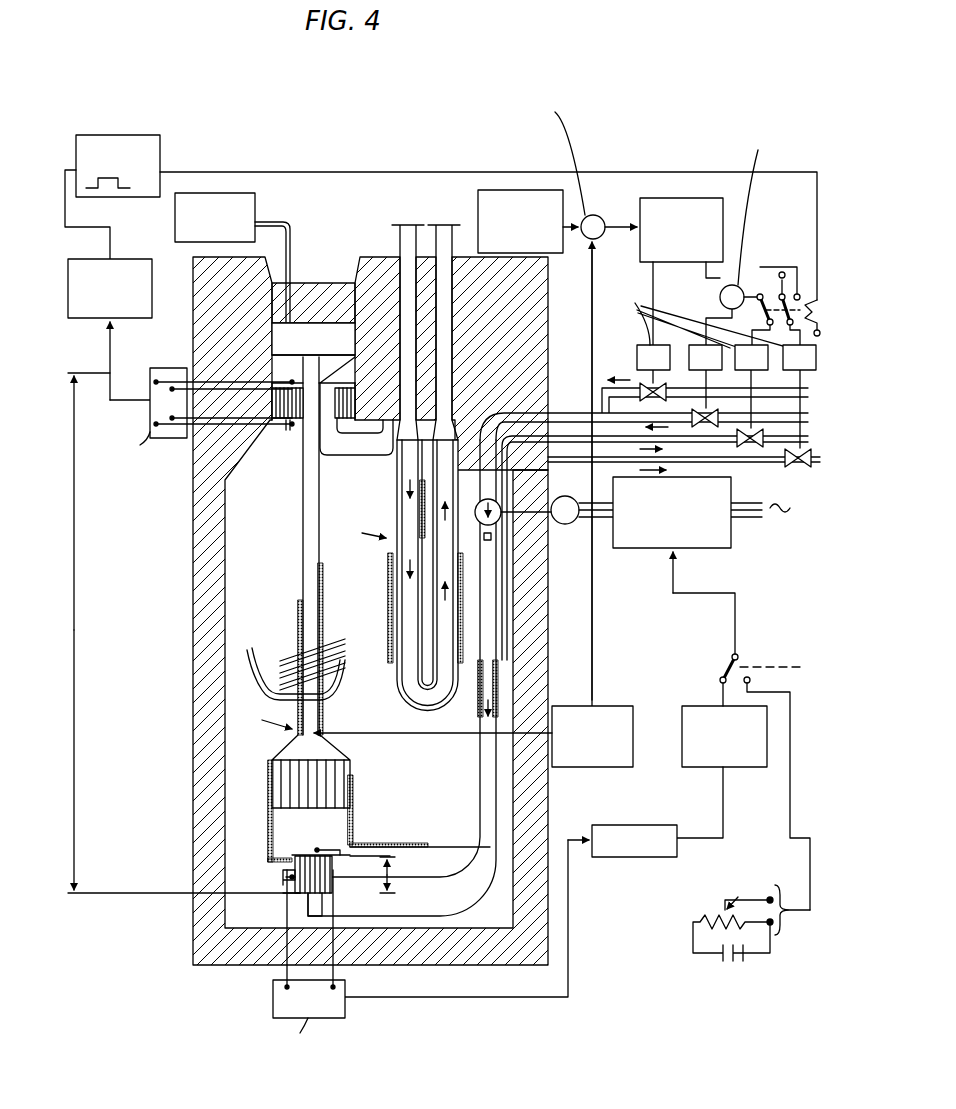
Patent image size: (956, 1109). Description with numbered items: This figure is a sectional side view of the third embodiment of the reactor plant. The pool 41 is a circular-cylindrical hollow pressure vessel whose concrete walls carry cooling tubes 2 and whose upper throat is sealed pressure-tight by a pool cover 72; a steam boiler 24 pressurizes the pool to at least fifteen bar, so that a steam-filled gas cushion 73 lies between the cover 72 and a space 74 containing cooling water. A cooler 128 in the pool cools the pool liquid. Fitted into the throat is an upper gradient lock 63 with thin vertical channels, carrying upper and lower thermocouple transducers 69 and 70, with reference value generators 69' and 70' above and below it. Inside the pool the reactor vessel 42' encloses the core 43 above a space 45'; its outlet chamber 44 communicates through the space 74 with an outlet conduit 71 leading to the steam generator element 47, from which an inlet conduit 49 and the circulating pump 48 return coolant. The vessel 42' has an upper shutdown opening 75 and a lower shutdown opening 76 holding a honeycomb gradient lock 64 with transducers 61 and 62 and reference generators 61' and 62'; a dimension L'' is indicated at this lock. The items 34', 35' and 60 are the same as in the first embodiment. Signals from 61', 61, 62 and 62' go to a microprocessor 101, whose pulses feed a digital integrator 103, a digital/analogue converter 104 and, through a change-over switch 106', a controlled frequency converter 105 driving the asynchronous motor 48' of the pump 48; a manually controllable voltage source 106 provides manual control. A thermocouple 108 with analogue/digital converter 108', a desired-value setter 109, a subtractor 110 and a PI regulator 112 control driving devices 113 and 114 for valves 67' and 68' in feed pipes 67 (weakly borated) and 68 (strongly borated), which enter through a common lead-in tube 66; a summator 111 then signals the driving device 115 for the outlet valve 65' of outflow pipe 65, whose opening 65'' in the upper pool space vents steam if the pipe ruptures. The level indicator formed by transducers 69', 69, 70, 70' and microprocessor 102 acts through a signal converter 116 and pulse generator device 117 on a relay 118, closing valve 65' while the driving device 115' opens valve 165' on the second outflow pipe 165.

The pulse generator device 117 is at (94, 135).
The steam boiler 24 is at (200, 193).
The pool cover 72 is at (312, 290).
The space containing cooling water 74 is at (335, 300).
The gas cushion 73 is at (337, 335).
The upper shutdown opening 75 is at (330, 383).
The item common with first embodiment 35' is at (403, 311).
The item common with first embodiment 34' is at (444, 311).
The desired-value setter 109 is at (503, 190).
The subtractor 110 is at (594, 215).
The regulator 112 is at (655, 198).
The summator 111 is at (745, 290).
The relay 118 is at (810, 300).
The microprocessor 102 is at (170, 368).
The upper reference value generator 69' is at (292, 369).
The common lead-in tube 66 is at (558, 378).
The valve 67' is at (633, 368).
The driving device 113 is at (693, 325).
The driving device 114 is at (705, 357).
The driving device 115 is at (751, 357).
The driving device 115' is at (799, 357).
The valve 68' is at (719, 399).
The inlet pipe 67 is at (727, 409).
The upper transducer 69 is at (290, 403).
The gradient lock 63 is at (343, 425).
The outflow pipe 65 is at (616, 649).
The lower reference value generator 70' is at (272, 445).
The lower transducer 70 is at (289, 453).
The outlet conduit 71 is at (360, 460).
The outflow pipe 165 is at (557, 483).
The outlet valve 65' is at (751, 461).
The inlet pipe 68 is at (795, 474).
The outlet chamber 44 is at (302, 538).
The steam generator element 47 is at (360, 533).
The circulating pump 48 is at (508, 525).
The asynchronous motor 48' is at (566, 537).
The controlled frequency converter 105 is at (717, 548).
The pool 41 is at (232, 588).
The item common with first embodiment 60 is at (388, 605).
The outlet valve 165' is at (773, 510).
The inlet opening 65'' is at (513, 576).
The change-over switch 106' is at (752, 761).
The cooler 128 is at (345, 663).
The tubes 2 is at (541, 690).
The analogue/digital converter 108' is at (597, 709).
The digital/analogue converter 104 is at (690, 706).
The reactor vessel 42' is at (279, 649).
The thermocouple 108 is at (433, 719).
The inlet conduit 49 is at (482, 748).
The reactor core 43 is at (282, 793).
The space below the core 45' is at (379, 811).
The digital integrator 103 is at (640, 825).
The transducer 61 is at (293, 835).
The reference generator 61' is at (308, 838).
The transducer 62 is at (261, 875).
The gradient lock 64 is at (330, 875).
The reference generator 62' is at (345, 905).
The lower shutdown opening 76 is at (290, 895).
The manually-controllable voltage source 106 is at (751, 944).
The microprocessor 101 is at (273, 992).
The signal converter 116 is at (86, 318).
The length L'' is at (393, 875).